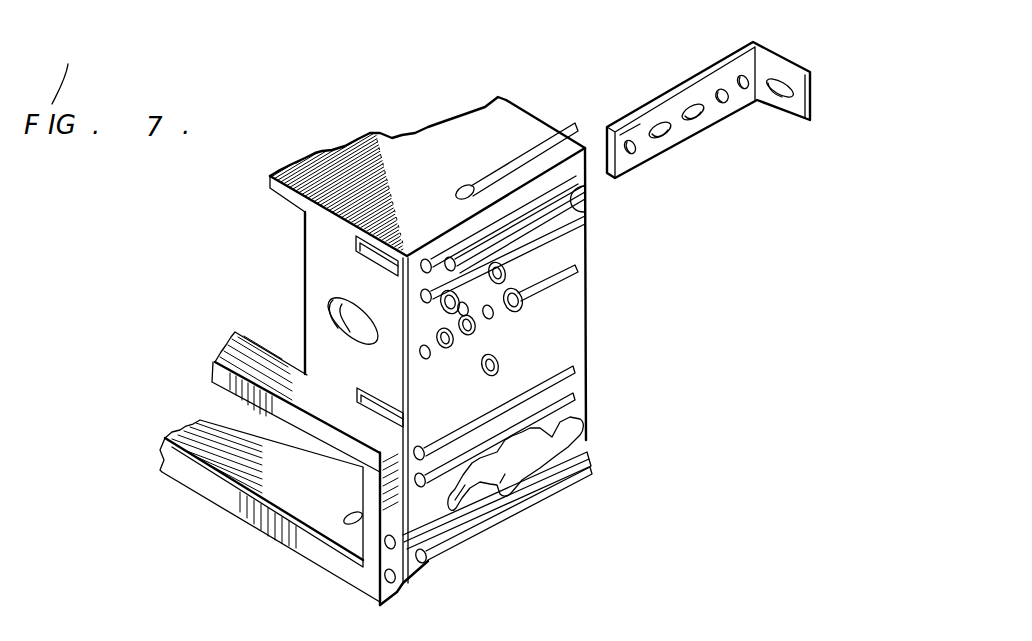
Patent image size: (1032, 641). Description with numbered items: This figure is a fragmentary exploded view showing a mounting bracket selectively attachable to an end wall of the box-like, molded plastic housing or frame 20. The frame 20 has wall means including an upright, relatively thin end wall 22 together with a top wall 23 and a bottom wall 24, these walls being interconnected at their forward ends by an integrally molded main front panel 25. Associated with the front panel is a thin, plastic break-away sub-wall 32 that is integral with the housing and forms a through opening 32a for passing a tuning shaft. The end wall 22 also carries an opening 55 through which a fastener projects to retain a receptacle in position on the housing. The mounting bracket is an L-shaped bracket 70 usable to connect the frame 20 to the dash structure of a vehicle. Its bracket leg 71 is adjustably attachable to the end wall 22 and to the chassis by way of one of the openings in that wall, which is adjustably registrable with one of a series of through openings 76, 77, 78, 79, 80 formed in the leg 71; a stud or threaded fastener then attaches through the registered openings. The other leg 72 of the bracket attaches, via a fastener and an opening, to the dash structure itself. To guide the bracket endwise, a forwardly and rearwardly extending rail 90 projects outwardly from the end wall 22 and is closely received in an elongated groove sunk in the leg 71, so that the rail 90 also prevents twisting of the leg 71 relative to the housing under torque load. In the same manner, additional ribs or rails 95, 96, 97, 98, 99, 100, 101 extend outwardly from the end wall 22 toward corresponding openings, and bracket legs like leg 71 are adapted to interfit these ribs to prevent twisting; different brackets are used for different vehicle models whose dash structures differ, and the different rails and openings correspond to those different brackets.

The housing or frame 20 is at (149, 494).
The end wall 22 is at (558, 320).
The top wall 23 is at (428, 148).
The bottom wall 24 is at (205, 433).
The main front panel 25 is at (213, 370).
The sub-wall 32 is at (305, 243).
The through opening 32a is at (335, 310).
The opening 55 is at (560, 433).
The L-shaped bracket 70 is at (830, 74).
The bracket leg 71 is at (648, 100).
The bracket leg 72 is at (424, 260).
The through opening 76 is at (630, 141).
The through opening 77 is at (660, 134).
The through opening 78 is at (690, 106).
The through opening 79 is at (722, 100).
The through opening 80 is at (738, 79).
The rail 90 is at (548, 188).
The rib or rail 95 is at (580, 212).
The rib or rail 96 is at (534, 242).
The rib or rail 97 is at (561, 276).
The rib or rail 98 is at (572, 365).
The rib or rail 99 is at (578, 394).
The rib or rail 100 is at (436, 522).
The rib or rail 101 is at (548, 470).